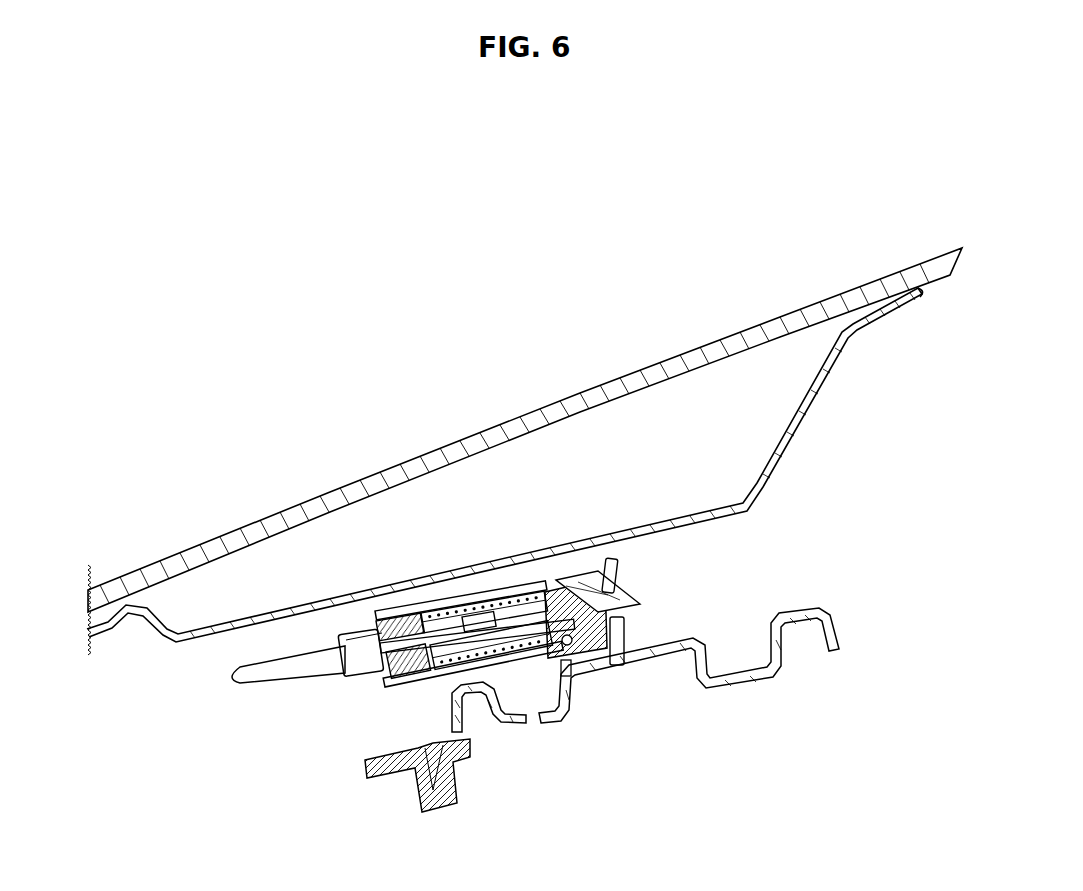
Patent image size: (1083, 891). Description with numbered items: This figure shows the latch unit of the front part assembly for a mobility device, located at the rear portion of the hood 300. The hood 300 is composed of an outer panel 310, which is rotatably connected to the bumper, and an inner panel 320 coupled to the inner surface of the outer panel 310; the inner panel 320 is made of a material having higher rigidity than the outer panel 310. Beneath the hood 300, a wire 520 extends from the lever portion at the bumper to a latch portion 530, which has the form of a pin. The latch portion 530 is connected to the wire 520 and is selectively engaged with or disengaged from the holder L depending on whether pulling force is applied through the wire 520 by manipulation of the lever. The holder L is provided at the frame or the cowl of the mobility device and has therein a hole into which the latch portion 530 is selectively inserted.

The hood 300 is at (703, 230).
The outer panel 310 is at (592, 392).
The inner panel 320 is at (687, 516).
The wire 520 is at (268, 675).
The latch portion 530 is at (522, 667).
The holder L is at (627, 630).